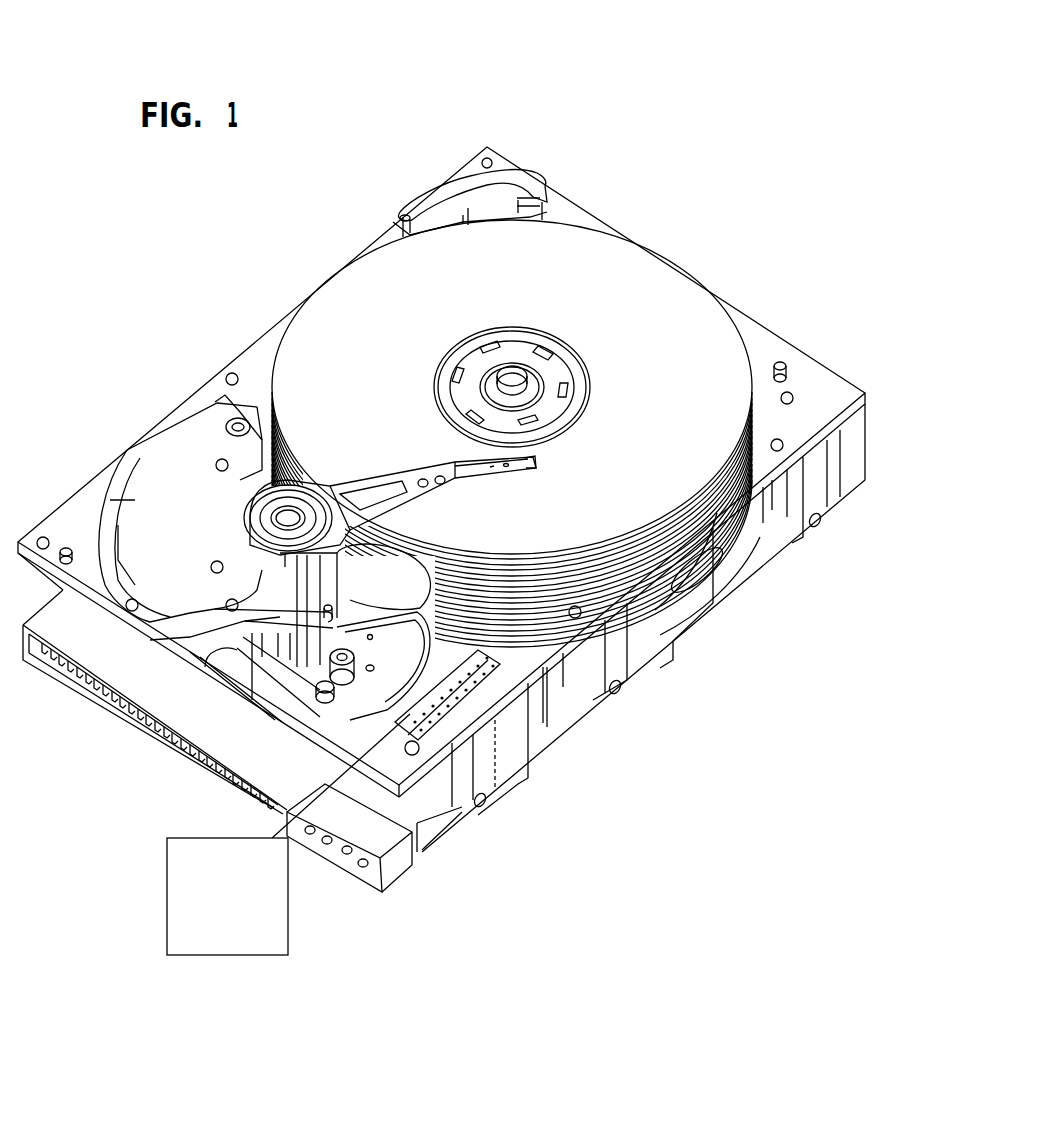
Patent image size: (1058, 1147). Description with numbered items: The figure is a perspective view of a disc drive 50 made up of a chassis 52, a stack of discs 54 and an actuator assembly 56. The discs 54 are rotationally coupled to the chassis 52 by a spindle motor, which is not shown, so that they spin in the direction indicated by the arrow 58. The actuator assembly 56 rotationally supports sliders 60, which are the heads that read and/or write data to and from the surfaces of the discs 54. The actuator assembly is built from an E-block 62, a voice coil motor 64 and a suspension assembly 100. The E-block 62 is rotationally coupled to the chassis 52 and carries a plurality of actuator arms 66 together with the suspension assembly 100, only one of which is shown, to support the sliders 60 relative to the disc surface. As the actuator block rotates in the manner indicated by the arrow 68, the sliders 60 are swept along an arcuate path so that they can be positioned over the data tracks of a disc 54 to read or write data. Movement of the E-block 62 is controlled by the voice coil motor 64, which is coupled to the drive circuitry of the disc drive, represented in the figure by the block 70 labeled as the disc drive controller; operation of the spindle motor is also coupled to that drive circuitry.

The disc drive 50 is at (643, 170).
The chassis 52 is at (818, 395).
The discs 54 is at (628, 378).
The actuator assembly 56 is at (366, 470).
The arrow 58 is at (323, 420).
The sliders 60 is at (532, 460).
The E-block 62 is at (325, 490).
The voice coil motor 64 is at (235, 468).
The actuator arms 66 is at (398, 476).
The arrow 68 is at (541, 452).
The drive circuitry block 70 is at (190, 838).
The suspension assembly 100 is at (480, 475).